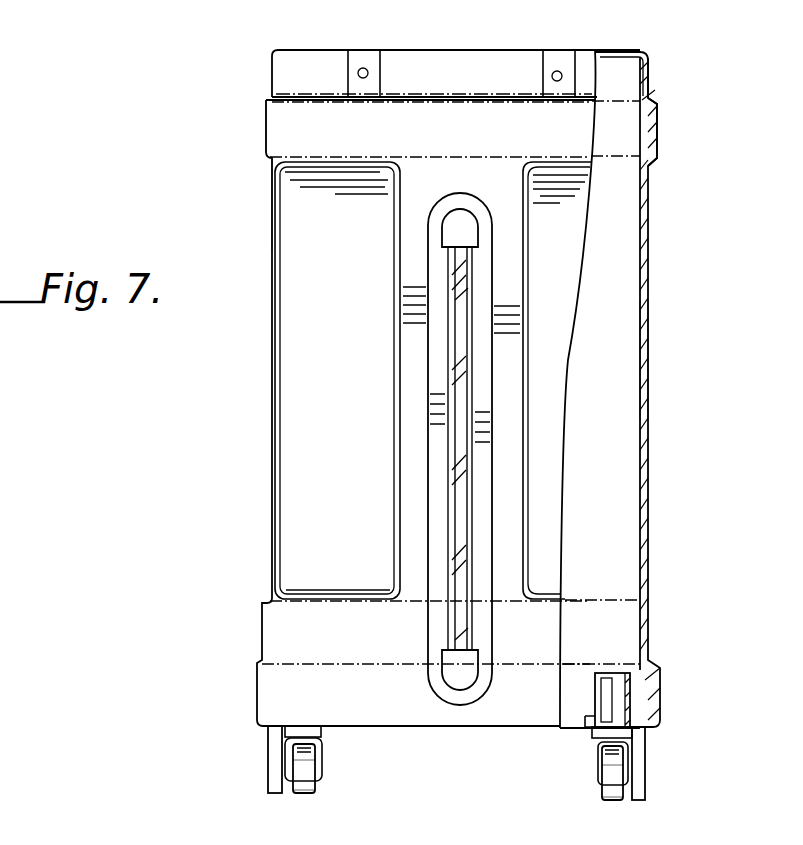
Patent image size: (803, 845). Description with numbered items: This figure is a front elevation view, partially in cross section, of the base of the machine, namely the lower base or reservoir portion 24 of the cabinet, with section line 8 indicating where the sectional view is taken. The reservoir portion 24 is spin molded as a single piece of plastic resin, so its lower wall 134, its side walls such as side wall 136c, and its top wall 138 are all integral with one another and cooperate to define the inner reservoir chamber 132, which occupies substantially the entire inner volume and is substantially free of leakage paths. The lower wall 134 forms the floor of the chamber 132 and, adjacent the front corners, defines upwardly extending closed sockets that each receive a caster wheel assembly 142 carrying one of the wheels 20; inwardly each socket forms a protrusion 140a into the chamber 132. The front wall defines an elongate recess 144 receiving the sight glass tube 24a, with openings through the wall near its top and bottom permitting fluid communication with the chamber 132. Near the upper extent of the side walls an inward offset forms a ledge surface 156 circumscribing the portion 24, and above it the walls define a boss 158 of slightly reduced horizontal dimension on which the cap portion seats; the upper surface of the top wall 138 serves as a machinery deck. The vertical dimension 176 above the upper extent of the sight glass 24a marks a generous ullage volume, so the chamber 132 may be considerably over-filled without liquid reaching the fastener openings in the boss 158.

The wheels 20 is at (275, 757).
The lower base or reservoir portion 24 is at (652, 215).
The sight glass tube 24a is at (447, 437).
The reservoir chamber 132 is at (622, 362).
The lower wall 134 is at (597, 713).
The side wall 136c is at (650, 362).
The top wall 138 is at (624, 56).
The protrusion 140a is at (632, 690).
The caster wheel assembly 142 is at (320, 789).
The elongate recess 144 is at (432, 500).
The ledge surface 156 is at (660, 106).
The boss 158 is at (272, 63).
The vertical dimension of ullage volume 176 is at (242, 95).
The section line 8- 8 is at (219, 375).